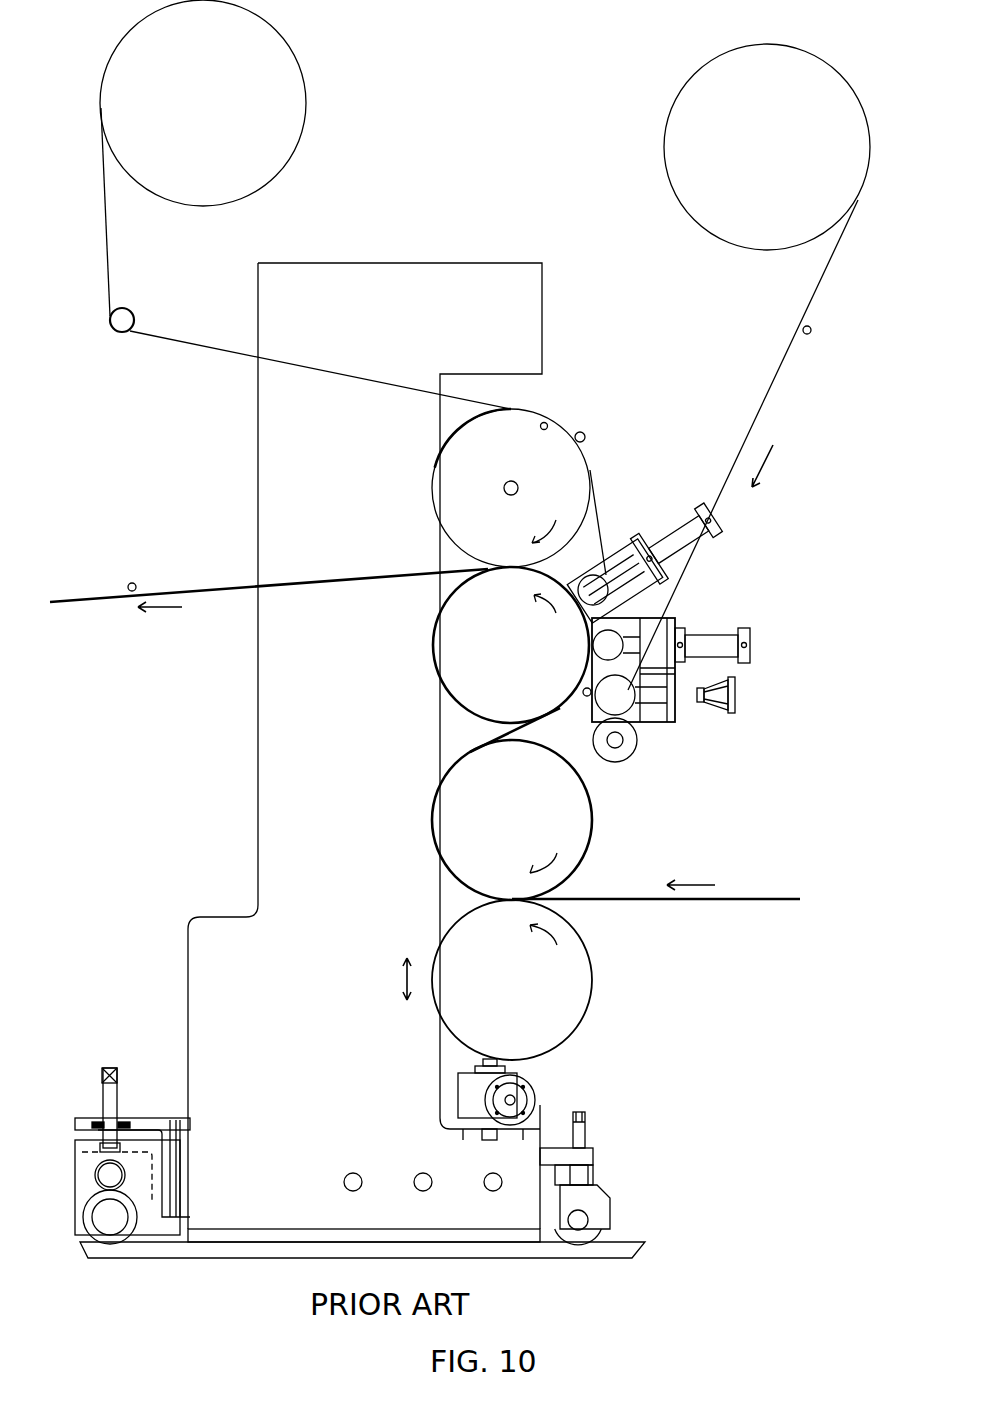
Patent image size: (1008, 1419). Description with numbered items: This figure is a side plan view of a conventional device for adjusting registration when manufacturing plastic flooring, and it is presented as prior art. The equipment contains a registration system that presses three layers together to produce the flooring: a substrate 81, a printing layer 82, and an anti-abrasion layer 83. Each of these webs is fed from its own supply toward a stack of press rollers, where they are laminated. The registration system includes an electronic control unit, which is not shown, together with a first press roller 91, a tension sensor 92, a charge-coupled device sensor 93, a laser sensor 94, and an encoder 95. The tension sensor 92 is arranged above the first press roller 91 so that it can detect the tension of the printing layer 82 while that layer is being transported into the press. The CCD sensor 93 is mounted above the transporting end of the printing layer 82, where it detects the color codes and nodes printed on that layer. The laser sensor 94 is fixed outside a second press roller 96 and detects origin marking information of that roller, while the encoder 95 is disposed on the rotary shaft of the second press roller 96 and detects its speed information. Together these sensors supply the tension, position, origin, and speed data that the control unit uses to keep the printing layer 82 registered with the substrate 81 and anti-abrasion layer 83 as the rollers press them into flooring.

The substrate 81 is at (748, 898).
The printing layer 82 is at (790, 378).
The anti-abrasion layer 83 is at (107, 254).
The first press roller 91 is at (627, 742).
The tension sensor 92 is at (615, 748).
The CCD sensor 93 is at (812, 333).
The laser sensor 94 is at (583, 432).
The encoder 95 is at (505, 485).
The second press roller 96 is at (443, 513).